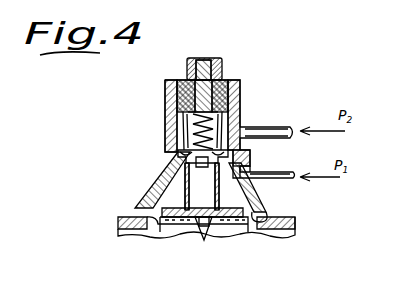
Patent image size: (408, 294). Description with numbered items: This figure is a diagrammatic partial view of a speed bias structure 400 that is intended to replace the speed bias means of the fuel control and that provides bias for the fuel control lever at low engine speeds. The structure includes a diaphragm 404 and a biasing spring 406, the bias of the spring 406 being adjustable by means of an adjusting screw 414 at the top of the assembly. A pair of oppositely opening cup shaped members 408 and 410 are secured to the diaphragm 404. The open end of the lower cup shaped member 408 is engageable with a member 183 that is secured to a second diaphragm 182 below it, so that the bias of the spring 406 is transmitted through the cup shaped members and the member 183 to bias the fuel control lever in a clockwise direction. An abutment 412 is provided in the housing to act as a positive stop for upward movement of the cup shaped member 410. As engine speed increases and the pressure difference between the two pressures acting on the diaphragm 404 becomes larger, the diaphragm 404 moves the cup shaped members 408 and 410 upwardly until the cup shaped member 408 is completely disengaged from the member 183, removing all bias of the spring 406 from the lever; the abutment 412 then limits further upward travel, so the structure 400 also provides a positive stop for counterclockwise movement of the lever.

The speed bias structure 400 is at (258, 42).
The adjusting screw 414 is at (212, 58).
The abutment 412 is at (178, 108).
The cup shaped member 410 is at (240, 118).
The biasing spring 406 is at (180, 134).
The diaphragm 404 is at (178, 152).
The cup shaped member 408 is at (250, 160).
The member 183 is at (162, 196).
The diaphragm 182 is at (258, 202).